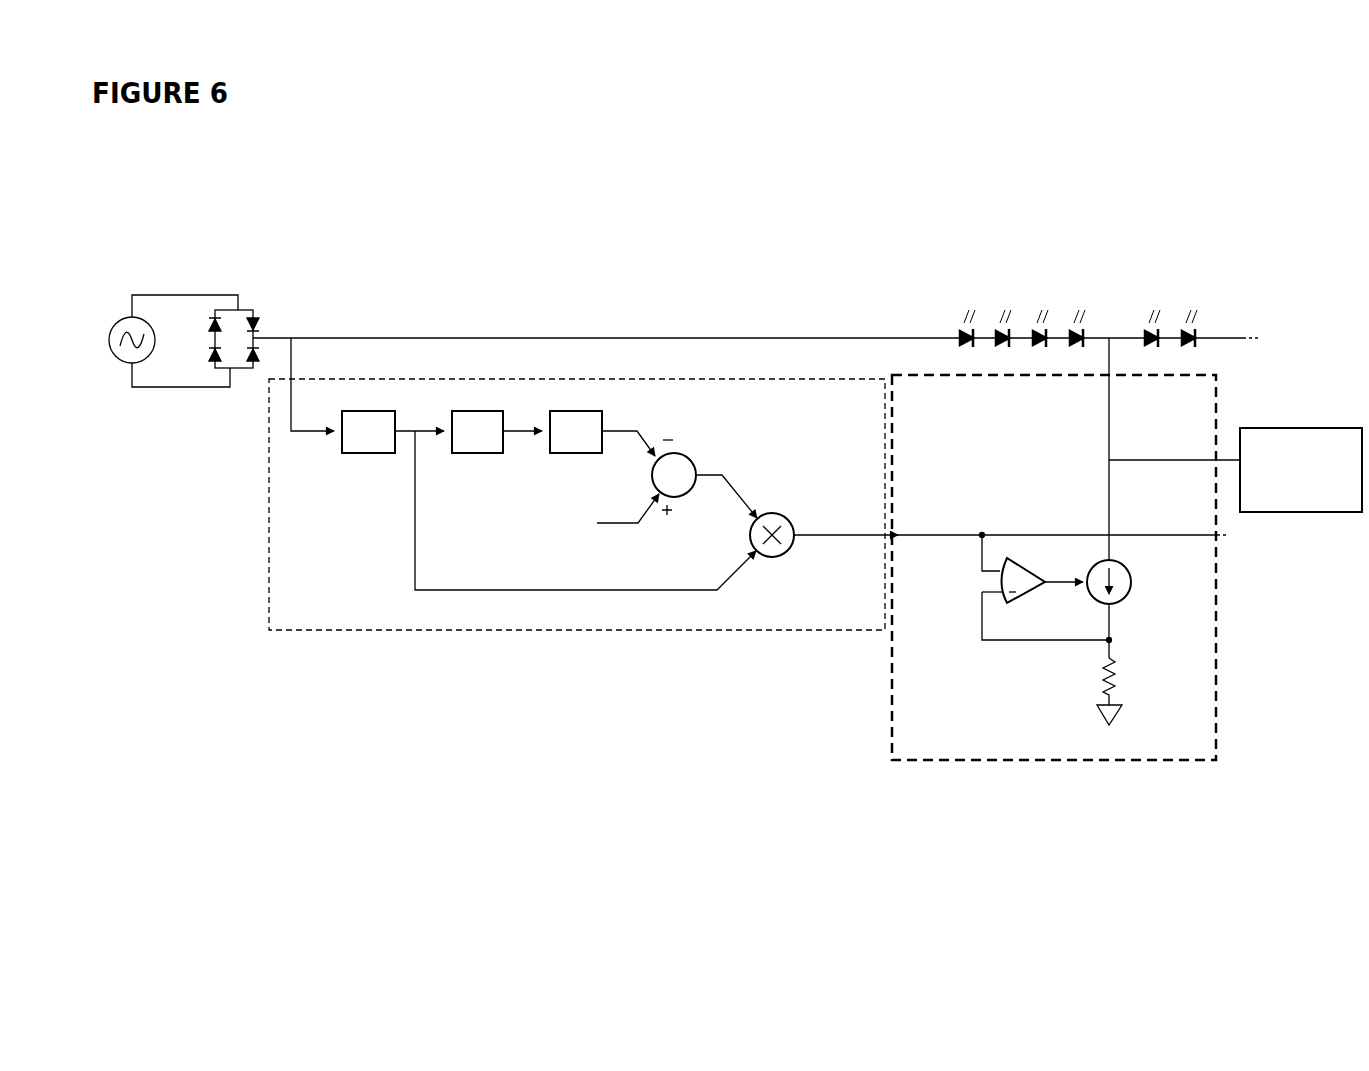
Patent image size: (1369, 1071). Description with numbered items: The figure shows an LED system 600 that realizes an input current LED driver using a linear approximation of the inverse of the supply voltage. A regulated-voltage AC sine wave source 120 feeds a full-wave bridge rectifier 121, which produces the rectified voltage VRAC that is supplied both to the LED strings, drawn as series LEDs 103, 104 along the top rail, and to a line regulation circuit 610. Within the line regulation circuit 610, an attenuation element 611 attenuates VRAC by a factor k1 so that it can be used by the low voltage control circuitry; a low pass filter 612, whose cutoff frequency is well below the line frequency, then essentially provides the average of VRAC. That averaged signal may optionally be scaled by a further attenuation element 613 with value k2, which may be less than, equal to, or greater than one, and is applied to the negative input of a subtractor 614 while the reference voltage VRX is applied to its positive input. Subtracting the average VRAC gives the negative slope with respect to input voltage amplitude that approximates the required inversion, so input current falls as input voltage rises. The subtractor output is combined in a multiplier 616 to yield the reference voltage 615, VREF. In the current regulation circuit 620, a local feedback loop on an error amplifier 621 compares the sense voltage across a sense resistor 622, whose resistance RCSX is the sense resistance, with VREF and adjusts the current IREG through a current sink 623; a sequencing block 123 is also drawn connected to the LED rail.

The LED system 600 is at (709, 454).
The regulated-voltage AC sine wave source 120 is at (111, 357).
The full-wave bridge rectifier 121 is at (208, 369).
The first LED string 103 is at (1033, 288).
The second LED string 104 is at (1190, 290).
The line regulation circuit 610 is at (747, 495).
The attenuation element 611 is at (353, 455).
The low pass filter 612 is at (478, 407).
The attenuation element 613 is at (598, 402).
The subtractor 614 is at (698, 458).
The reference voltage 615 is at (850, 543).
The multiplier 616 is at (791, 500).
The current regulation circuit 620 is at (1063, 549).
The error amplifier 621 is at (975, 592).
The sense resistor 622 is at (1093, 676).
The current sink 623 is at (1138, 600).
The sequencing circuit 123 is at (1301, 470).